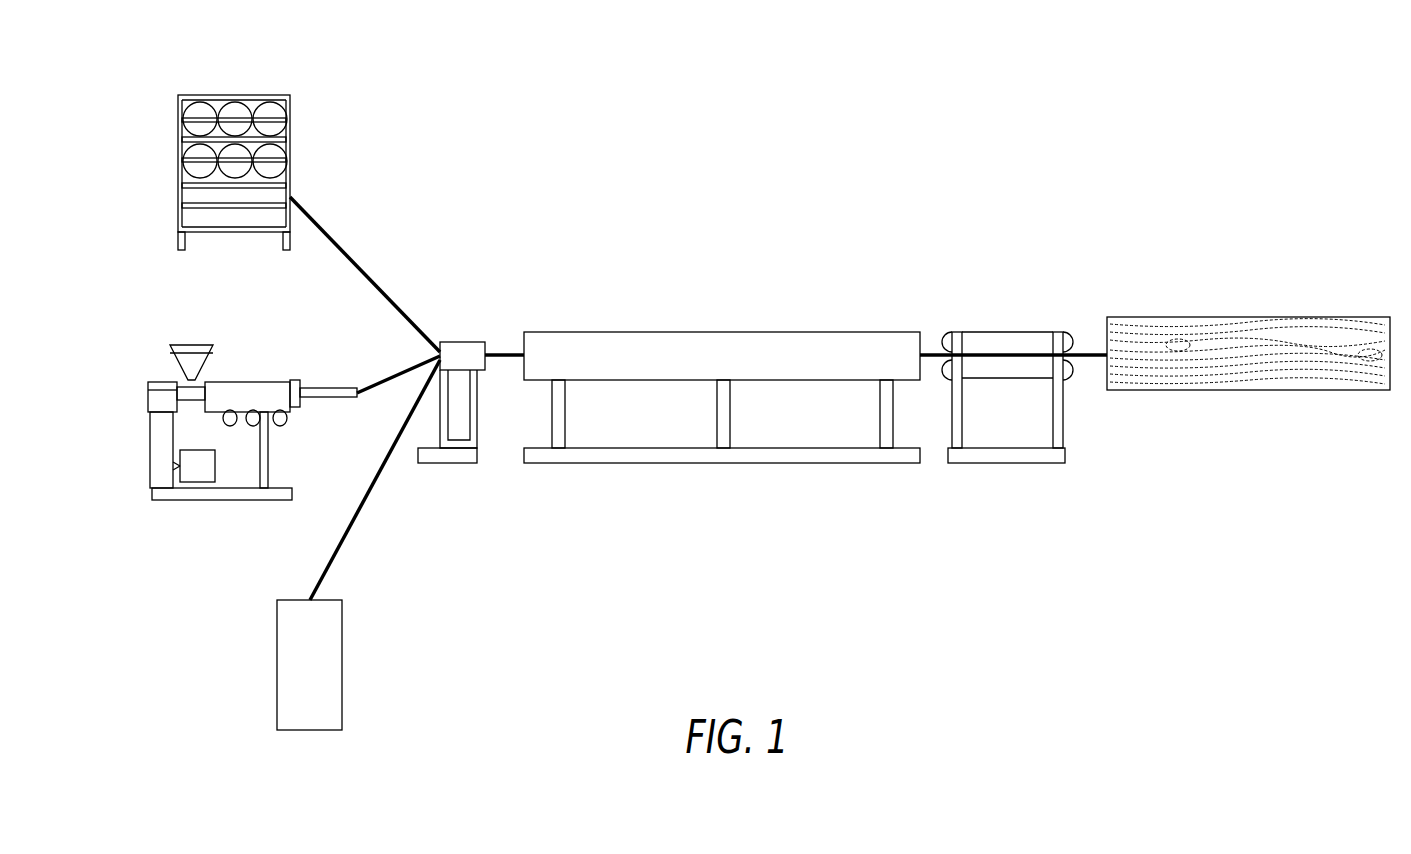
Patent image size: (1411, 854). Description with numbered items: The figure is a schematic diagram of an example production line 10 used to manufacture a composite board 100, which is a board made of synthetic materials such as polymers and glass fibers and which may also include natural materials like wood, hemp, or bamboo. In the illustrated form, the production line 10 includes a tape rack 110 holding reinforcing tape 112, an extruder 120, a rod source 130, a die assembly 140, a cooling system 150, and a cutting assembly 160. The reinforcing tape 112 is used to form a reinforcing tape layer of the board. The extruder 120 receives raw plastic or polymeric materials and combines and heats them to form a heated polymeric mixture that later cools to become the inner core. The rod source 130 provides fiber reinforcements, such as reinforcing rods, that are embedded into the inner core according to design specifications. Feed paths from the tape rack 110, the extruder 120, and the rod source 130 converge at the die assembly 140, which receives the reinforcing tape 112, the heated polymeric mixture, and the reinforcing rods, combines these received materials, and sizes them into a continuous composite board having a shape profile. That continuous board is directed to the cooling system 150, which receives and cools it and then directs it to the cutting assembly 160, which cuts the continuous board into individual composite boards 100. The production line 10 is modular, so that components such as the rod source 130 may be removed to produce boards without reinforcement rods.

The production line 10 is at (893, 167).
The composite board 100 is at (1248, 412).
The tape rack 110 is at (149, 115).
The reinforcing tape 112 is at (272, 110).
The extruder 120 is at (129, 384).
The rod source 130 is at (251, 634).
The die assembly 140 is at (455, 485).
The cooling system 150 is at (722, 485).
The cutting assembly 160 is at (1005, 485).